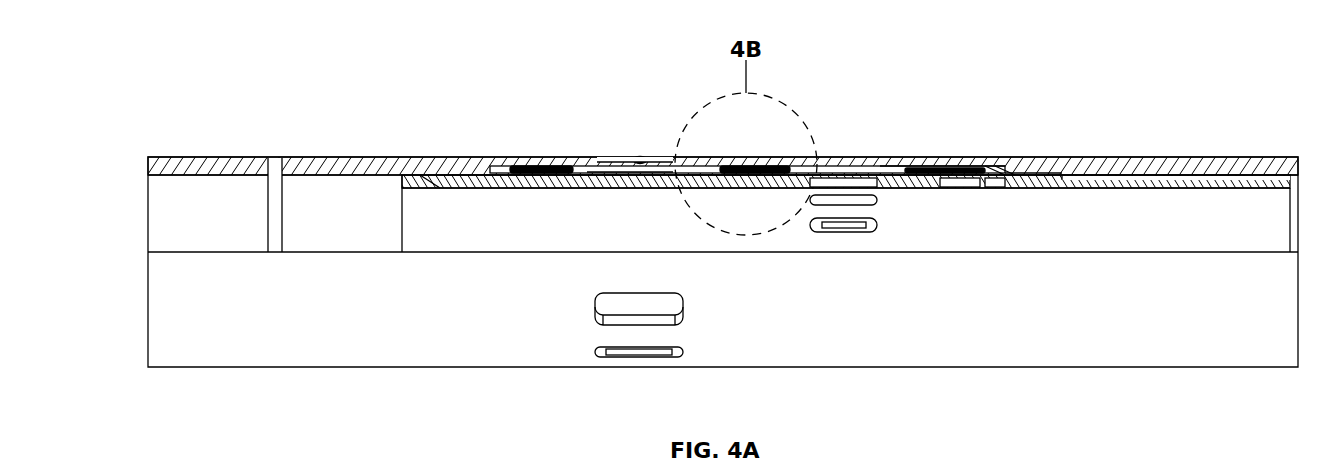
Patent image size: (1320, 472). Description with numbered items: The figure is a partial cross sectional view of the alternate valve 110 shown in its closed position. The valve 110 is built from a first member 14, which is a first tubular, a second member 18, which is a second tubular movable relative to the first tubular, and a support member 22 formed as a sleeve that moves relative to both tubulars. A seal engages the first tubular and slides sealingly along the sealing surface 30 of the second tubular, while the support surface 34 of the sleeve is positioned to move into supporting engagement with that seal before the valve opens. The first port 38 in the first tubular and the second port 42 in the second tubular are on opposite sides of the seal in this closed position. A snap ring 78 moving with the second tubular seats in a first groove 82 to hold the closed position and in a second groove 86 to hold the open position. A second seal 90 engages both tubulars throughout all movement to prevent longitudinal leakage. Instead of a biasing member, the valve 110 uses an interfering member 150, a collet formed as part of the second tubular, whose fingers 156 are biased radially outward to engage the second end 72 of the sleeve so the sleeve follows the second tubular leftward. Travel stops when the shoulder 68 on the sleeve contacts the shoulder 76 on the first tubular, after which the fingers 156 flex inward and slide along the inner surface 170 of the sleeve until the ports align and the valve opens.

The valve 110 is at (262, 53).
The first member 14 is at (362, 157).
The second groove 86 is at (273, 160).
The second member 18 is at (432, 173).
The snap ring 78 is at (477, 175).
The first groove 82 is at (473, 170).
The second seal 90 is at (540, 170).
The first port 38 is at (610, 162).
The sealing surface 30 is at (637, 158).
The support surface 34 is at (887, 167).
The support member 22 is at (943, 170).
The shoulder 68 is at (1000, 172).
The inner surface 170 is at (1017, 170).
The interfering member 150 is at (1060, 173).
The shoulder 76 is at (920, 177).
The second end 72 is at (967, 180).
The fingers 156 is at (1003, 180).
The second port 42 is at (877, 225).